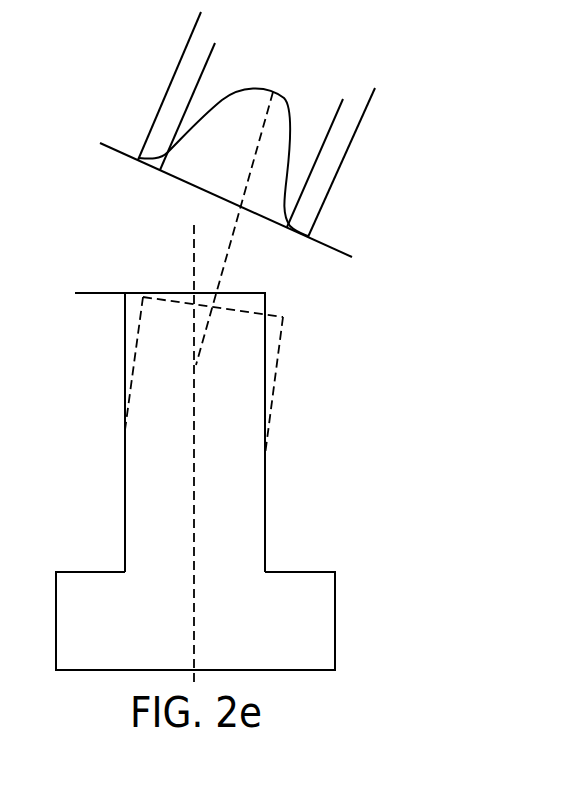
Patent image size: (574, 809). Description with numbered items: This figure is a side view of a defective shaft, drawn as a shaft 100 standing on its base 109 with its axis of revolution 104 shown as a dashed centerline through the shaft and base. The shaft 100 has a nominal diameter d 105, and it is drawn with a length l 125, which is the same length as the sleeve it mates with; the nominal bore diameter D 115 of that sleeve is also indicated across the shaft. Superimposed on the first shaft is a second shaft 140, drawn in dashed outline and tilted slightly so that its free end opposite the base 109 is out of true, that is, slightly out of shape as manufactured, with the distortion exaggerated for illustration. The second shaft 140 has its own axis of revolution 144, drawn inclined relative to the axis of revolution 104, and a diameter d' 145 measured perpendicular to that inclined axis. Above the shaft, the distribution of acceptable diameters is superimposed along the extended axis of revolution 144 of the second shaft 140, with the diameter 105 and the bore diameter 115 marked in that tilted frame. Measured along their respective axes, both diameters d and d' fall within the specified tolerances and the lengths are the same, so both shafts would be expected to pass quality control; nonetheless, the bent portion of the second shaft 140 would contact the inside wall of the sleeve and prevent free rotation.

The shaft 100 is at (242, 452).
The axis of revolution 104 is at (194, 282).
The nominal diameter d 105 is at (265, 365).
The base 109 is at (305, 622).
The nominal bore diameter D 115 is at (295, 410).
The length l 125 is at (98, 293).
The second shaft 140 is at (275, 382).
The axis of revolution of second shaft 144 is at (218, 235).
The diameter d' 145 is at (280, 345).